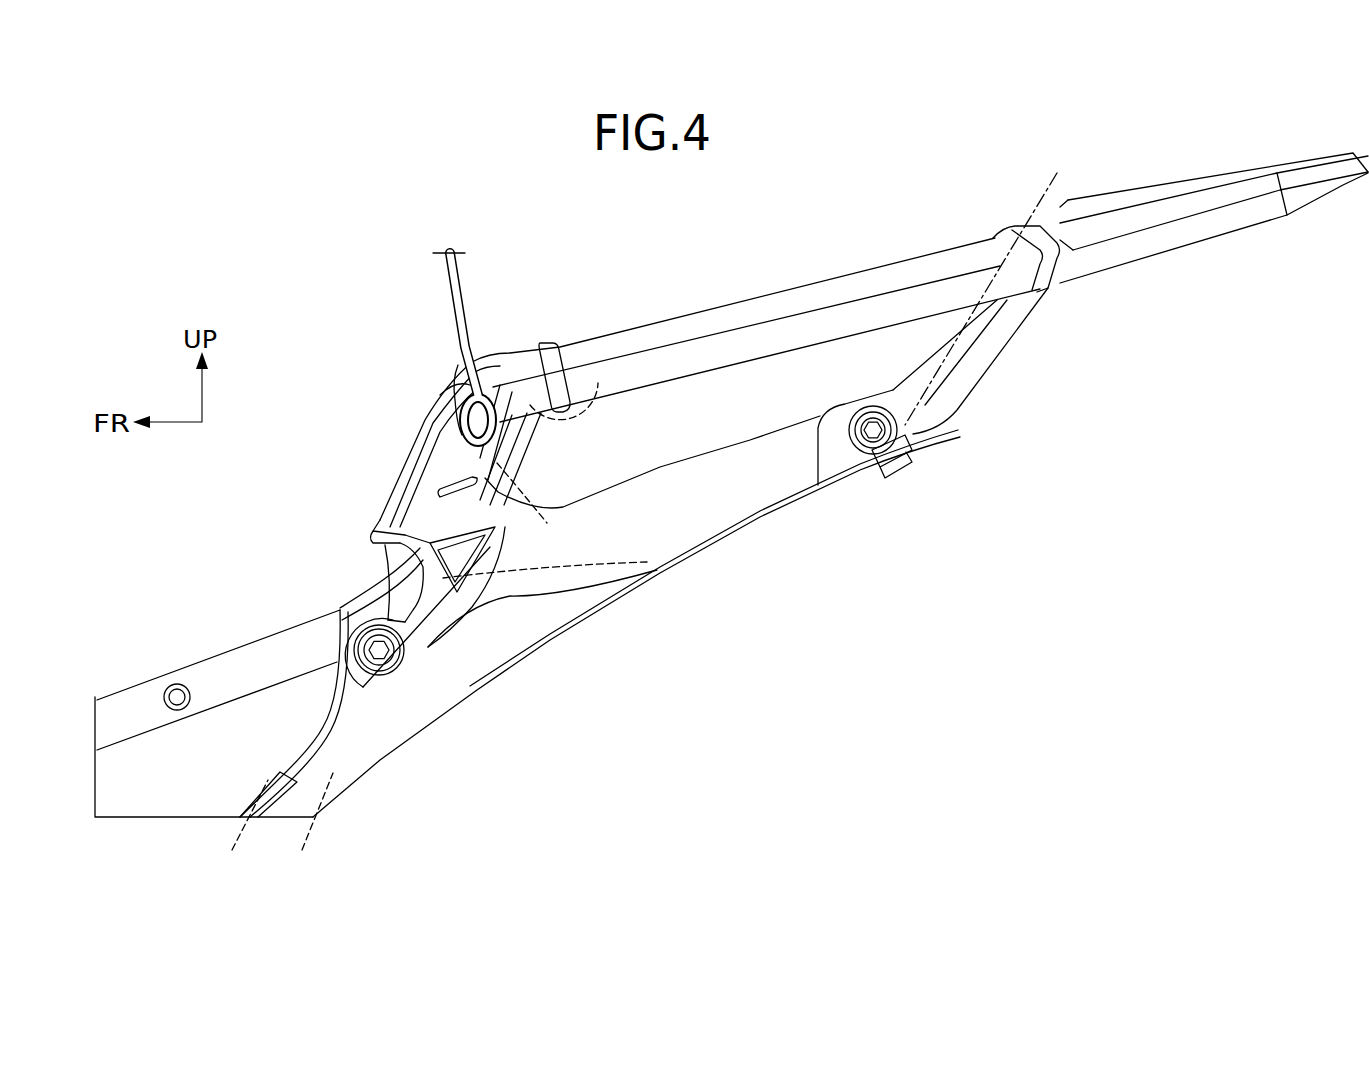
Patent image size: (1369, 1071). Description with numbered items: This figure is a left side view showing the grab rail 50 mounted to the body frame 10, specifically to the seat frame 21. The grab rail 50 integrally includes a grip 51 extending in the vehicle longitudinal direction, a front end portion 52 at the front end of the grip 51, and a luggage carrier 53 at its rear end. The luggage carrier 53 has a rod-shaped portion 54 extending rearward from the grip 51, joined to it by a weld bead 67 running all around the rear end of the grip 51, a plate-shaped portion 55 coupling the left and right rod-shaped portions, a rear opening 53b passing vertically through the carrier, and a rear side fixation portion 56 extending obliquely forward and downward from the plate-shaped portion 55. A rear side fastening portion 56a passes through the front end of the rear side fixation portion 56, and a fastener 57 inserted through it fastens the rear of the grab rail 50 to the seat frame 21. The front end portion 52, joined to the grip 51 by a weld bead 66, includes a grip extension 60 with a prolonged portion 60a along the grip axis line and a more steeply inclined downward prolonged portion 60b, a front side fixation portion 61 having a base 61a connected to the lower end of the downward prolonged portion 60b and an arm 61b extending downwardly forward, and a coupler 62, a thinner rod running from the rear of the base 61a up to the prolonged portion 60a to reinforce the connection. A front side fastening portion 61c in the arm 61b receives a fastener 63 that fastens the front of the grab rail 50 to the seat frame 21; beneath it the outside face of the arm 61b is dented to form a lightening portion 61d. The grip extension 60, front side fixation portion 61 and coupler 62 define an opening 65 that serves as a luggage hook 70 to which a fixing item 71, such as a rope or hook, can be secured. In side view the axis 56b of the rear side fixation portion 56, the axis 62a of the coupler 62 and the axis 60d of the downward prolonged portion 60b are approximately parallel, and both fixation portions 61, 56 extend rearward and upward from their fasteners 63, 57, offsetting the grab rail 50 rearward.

The body frame 10 is at (138, 676).
The seat frame 21 is at (700, 527).
The grab rail 50 is at (777, 282).
The grip 51 is at (733, 316).
The front end portion 52 is at (437, 400).
The luggage carrier 53 is at (1233, 162).
The rear opening 53b is at (1193, 177).
The rod-shaped portion 54 is at (1157, 243).
The plate-shaped portion 55 is at (1150, 187).
The rear side fixation portion 56 is at (967, 380).
The rear side fastening portion 56a is at (895, 467).
The axis of rear side fixation portion 56b is at (967, 338).
The fastener 57 is at (900, 440).
The grip extension 60 is at (502, 350).
The prolonged portion 60a is at (520, 370).
The downward prolonged portion 60b is at (413, 468).
The axis of downward prolonged portion 60d is at (370, 553).
The front side fixation portion 61 is at (458, 638).
The base 61a is at (505, 600).
The arm 61b is at (450, 640).
The front side fastening portion 61c is at (413, 673).
The lightening portion 61d is at (407, 577).
The coupler 62 is at (548, 450).
The axis of coupler 62a is at (600, 380).
The fastener 63 is at (375, 680).
The opening 65 is at (441, 456).
The weld bead 66 is at (548, 345).
The weld bead 67 is at (1037, 224).
The luggage hook 70 is at (462, 463).
The fixing item 71 is at (445, 297).